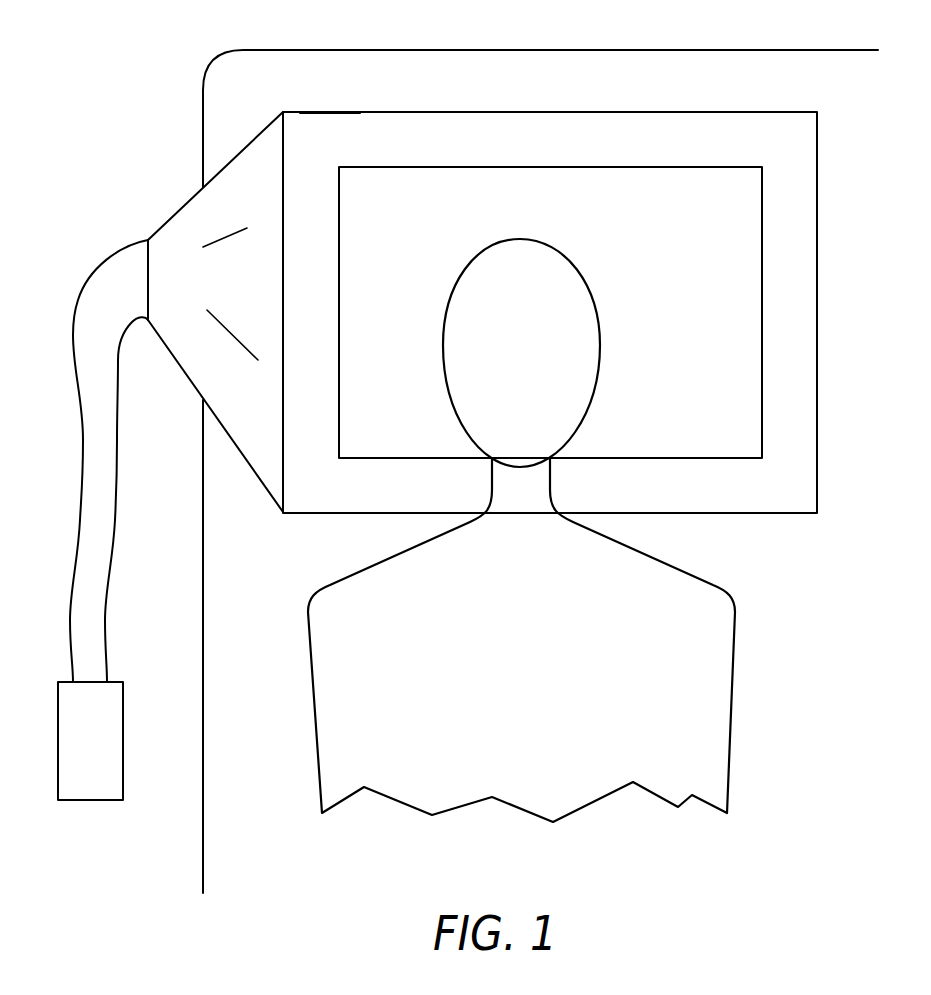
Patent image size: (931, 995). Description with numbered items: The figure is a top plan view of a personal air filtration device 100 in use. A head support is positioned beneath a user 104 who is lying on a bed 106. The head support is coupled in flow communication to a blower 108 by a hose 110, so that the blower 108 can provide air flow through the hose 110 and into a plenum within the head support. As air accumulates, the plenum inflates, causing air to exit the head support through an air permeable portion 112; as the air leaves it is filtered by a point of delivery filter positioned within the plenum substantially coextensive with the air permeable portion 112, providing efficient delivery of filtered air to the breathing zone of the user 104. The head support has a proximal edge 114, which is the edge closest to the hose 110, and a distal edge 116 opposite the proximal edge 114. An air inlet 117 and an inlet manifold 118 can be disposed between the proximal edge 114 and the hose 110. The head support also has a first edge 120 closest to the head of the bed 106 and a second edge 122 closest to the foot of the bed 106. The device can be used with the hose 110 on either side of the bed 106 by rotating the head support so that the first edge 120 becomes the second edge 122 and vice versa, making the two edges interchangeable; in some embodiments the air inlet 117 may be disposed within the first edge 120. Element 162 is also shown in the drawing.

The personal air filtration device 100 is at (113, 226).
The user 104 is at (553, 275).
The bed 106 is at (217, 94).
The blower 108 is at (95, 787).
The hose 110 is at (87, 610).
The air permeable portion 112 is at (697, 178).
The proximal edge 114 is at (283, 467).
The distal edge 116 is at (818, 308).
The air inlet 117 is at (148, 277).
The inlet manifold 118 is at (175, 327).
The first edge 120 is at (432, 110).
The second edge 122 is at (742, 515).
The bezel portion 162 is at (328, 123).